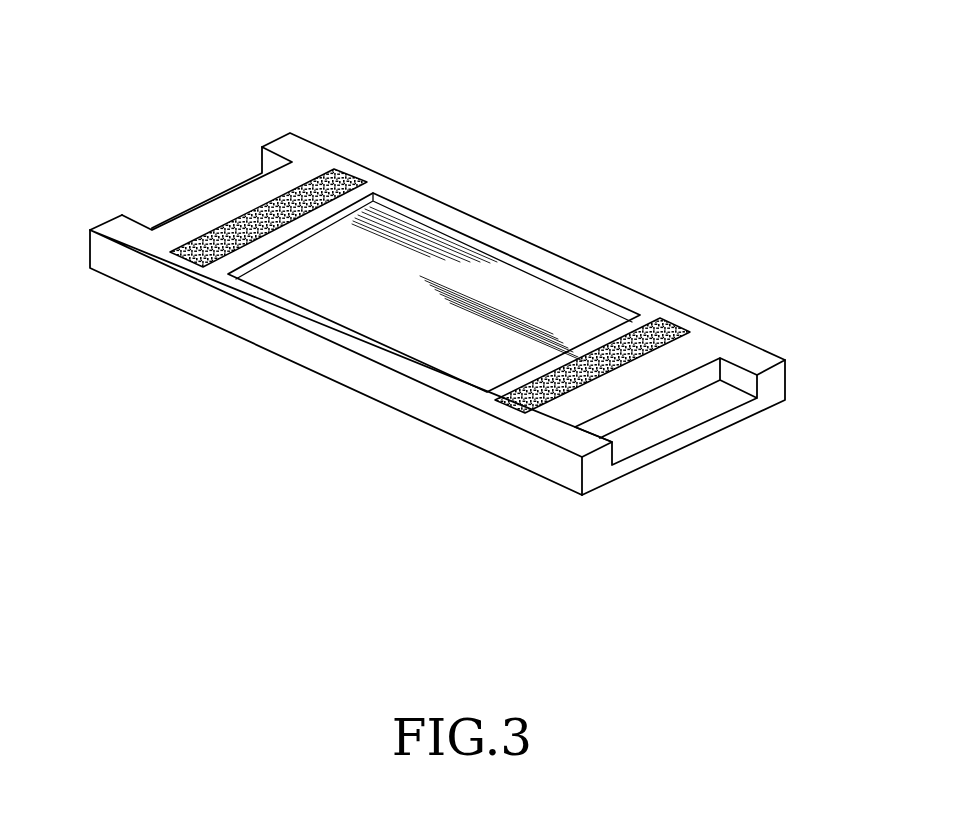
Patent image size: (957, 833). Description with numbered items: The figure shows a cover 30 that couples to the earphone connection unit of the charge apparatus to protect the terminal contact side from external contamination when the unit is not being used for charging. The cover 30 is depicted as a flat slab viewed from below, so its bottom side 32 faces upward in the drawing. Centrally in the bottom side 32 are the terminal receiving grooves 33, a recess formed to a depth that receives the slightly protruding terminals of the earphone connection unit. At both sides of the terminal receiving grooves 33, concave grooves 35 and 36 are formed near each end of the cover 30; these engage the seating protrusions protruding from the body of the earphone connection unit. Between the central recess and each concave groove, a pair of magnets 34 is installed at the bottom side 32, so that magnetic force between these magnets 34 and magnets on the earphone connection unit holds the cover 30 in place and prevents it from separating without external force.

The cover 30 is at (645, 213).
The bottom side 32 is at (505, 245).
The terminal receiving grooves 33 is at (407, 250).
The magnets 34 is at (338, 171).
The concave groove 35 is at (702, 405).
The concave groove 36 is at (215, 188).